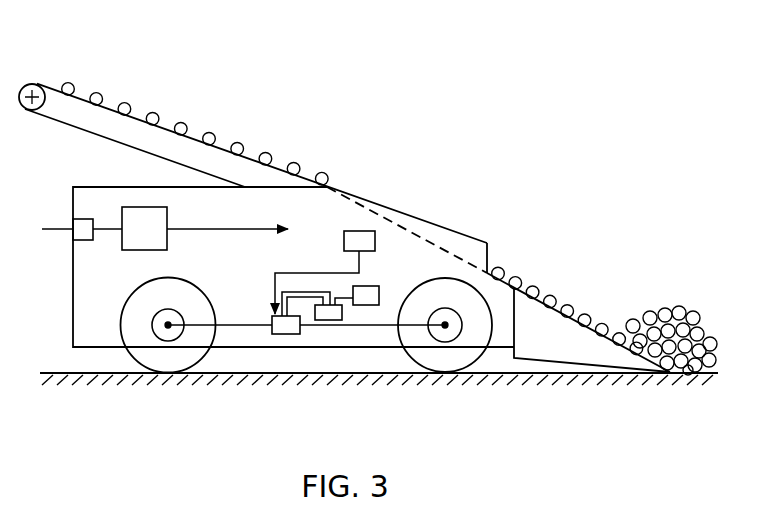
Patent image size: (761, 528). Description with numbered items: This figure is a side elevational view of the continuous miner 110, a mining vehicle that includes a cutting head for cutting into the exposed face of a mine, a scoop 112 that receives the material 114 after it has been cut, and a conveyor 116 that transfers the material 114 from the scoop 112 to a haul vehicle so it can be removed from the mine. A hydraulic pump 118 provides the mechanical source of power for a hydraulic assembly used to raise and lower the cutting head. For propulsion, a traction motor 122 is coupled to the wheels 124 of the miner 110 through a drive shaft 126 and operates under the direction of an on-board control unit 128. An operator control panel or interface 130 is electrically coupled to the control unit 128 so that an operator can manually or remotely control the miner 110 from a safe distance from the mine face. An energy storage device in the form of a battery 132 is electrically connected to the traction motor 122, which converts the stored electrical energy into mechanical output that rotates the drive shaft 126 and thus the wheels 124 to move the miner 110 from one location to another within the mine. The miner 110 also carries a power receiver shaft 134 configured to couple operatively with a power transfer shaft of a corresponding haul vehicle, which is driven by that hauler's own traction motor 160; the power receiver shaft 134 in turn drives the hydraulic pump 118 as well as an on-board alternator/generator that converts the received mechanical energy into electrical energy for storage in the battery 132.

The continuous miner 110 is at (361, 104).
The scoop 112 is at (558, 335).
The material 114 is at (642, 297).
The conveyor 116 is at (165, 121).
The hydraulic pump 118 is at (138, 215).
The traction motor 122 is at (286, 334).
The wheels 124 is at (168, 356).
The drive shaft 126 is at (232, 324).
The on-board control unit 128 is at (331, 320).
The operator control panel or interface 130 is at (366, 230).
The battery 132 is at (371, 292).
The power receiver shaft 134 is at (108, 227).
The traction motor 160 is at (53, 228).